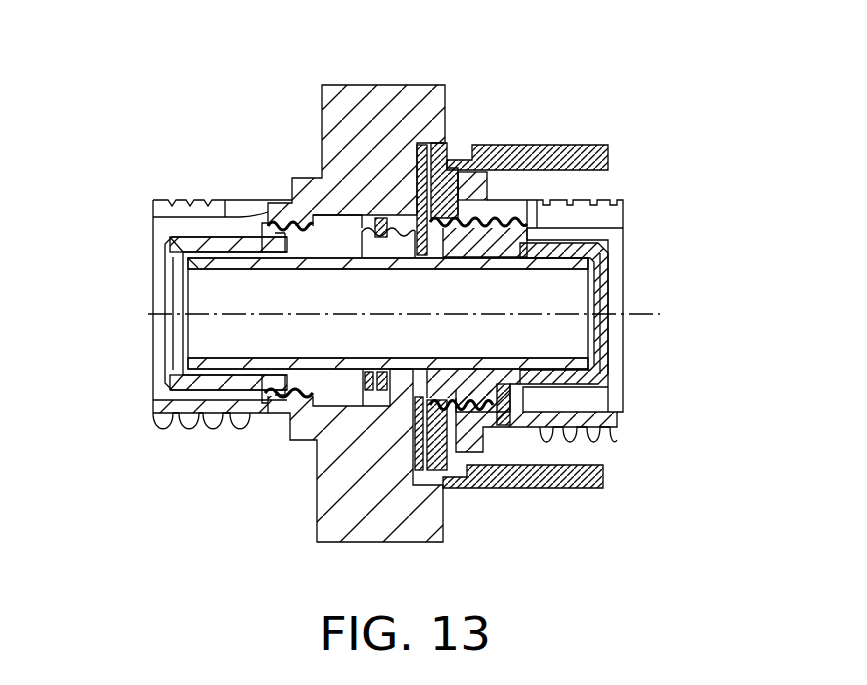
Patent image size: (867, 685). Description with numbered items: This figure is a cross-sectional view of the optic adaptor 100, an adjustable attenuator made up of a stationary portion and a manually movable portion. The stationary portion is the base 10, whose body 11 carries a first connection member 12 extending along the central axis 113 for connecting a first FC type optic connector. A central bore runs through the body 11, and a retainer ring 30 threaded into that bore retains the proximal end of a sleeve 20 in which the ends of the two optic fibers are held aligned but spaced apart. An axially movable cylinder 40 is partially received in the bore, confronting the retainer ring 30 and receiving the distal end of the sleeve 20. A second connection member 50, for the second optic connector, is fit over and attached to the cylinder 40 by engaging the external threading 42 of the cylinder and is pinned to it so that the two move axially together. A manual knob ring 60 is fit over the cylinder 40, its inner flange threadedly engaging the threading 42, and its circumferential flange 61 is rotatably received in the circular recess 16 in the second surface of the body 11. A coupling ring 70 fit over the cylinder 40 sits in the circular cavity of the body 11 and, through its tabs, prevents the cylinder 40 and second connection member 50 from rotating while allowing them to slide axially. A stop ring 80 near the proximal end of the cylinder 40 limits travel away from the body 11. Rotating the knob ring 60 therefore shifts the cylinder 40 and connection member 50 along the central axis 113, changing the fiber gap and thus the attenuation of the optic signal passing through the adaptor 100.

The optic adaptor 100 is at (410, 279).
The base 10 is at (322, 132).
The body 11 is at (372, 122).
The first connection member 12 is at (185, 200).
The circular recess 16 is at (445, 150).
The sleeve 20 is at (218, 292).
The retainer ring 30 is at (222, 378).
The axially movable cylinder 40 is at (503, 232).
The external threading 42 is at (420, 432).
The second connection member 50 is at (600, 440).
The manual knob ring 60 is at (492, 152).
The circumferential flange 61 is at (452, 481).
The coupling ring 70 is at (430, 148).
The stop ring 80 is at (384, 226).
The central axis 113 is at (648, 318).